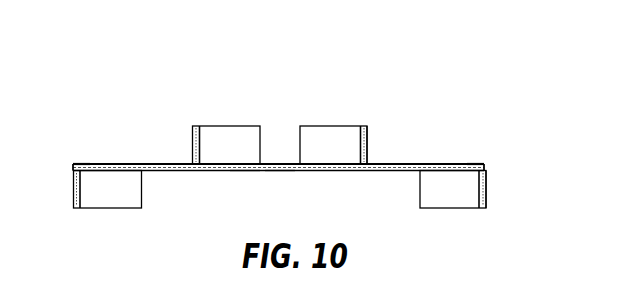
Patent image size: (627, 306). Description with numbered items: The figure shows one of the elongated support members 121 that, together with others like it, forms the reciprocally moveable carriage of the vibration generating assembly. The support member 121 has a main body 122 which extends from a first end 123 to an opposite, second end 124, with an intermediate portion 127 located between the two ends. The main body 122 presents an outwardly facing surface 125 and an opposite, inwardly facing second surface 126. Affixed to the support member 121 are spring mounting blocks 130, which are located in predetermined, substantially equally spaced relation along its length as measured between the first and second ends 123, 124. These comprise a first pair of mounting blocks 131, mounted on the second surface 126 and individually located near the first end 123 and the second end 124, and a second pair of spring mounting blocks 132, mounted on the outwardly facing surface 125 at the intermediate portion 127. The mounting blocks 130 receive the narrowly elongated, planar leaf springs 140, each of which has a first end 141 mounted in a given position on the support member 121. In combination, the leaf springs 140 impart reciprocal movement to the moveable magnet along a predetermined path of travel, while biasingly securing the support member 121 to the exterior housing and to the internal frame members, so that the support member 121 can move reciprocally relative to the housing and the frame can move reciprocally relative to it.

The support member 121 is at (389, 165).
The main body 122 is at (280, 171).
The first end 123 is at (88, 163).
The second end 124 is at (471, 164).
The outwardly facing surface 125 is at (167, 163).
The second surface 126 is at (245, 171).
The intermediate portion 127 is at (275, 163).
The spring mounting blocks 130 is at (244, 92).
The first pair of mounting blocks 131 is at (112, 202).
The second pair of spring mounting blocks 132 is at (220, 126).
The planar leaf springs 140 is at (369, 143).
The first end 141 is at (487, 190).